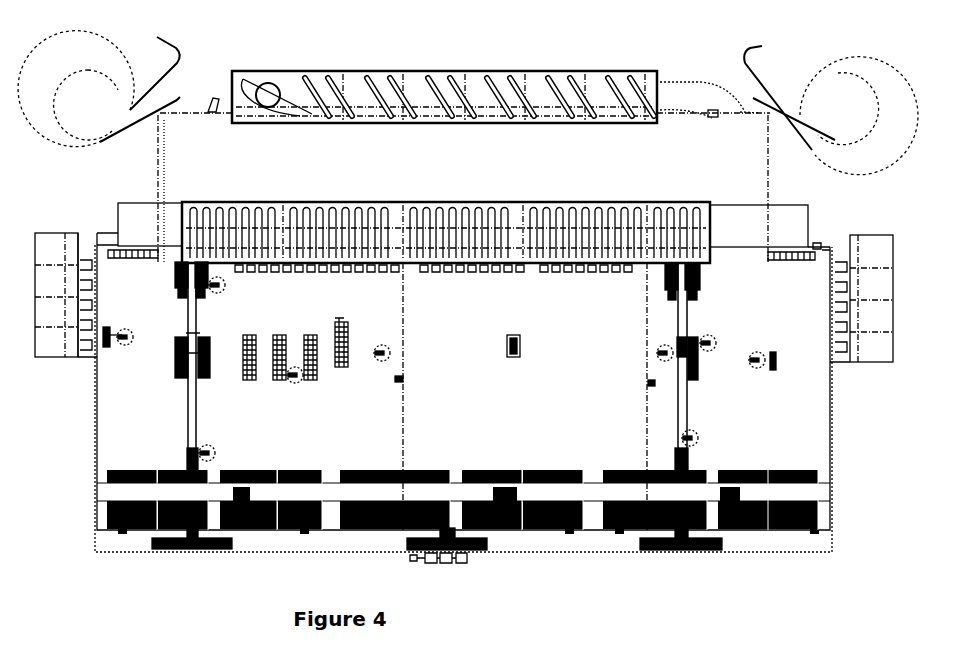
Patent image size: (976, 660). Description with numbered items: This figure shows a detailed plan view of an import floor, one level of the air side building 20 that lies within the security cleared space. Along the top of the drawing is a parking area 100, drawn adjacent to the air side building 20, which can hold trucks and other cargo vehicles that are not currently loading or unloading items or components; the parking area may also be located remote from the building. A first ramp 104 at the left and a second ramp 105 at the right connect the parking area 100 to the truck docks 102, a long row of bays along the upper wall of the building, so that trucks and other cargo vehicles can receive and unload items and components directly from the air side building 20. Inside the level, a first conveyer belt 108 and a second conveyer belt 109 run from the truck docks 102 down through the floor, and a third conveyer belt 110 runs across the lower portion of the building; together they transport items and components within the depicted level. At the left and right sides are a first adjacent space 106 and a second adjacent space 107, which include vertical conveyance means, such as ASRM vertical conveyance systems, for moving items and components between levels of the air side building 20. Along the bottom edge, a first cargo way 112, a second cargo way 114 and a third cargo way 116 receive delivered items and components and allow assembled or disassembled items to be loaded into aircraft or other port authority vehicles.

The air side building 20 is at (79, 561).
The parking area 100 is at (415, 71).
The truck docks 102 is at (415, 202).
The first ramp 104 is at (84, 46).
The second ramp 105 is at (838, 50).
The first adjacent space 106 is at (48, 358).
The second adjacent space 107 is at (869, 362).
The first conveyer belt 108 is at (198, 317).
The second conveyer belt 109 is at (690, 317).
The third conveyer belt 110 is at (457, 485).
The first cargo way 112 is at (187, 550).
The second cargo way 114 is at (477, 550).
The third cargo way 116 is at (673, 550).